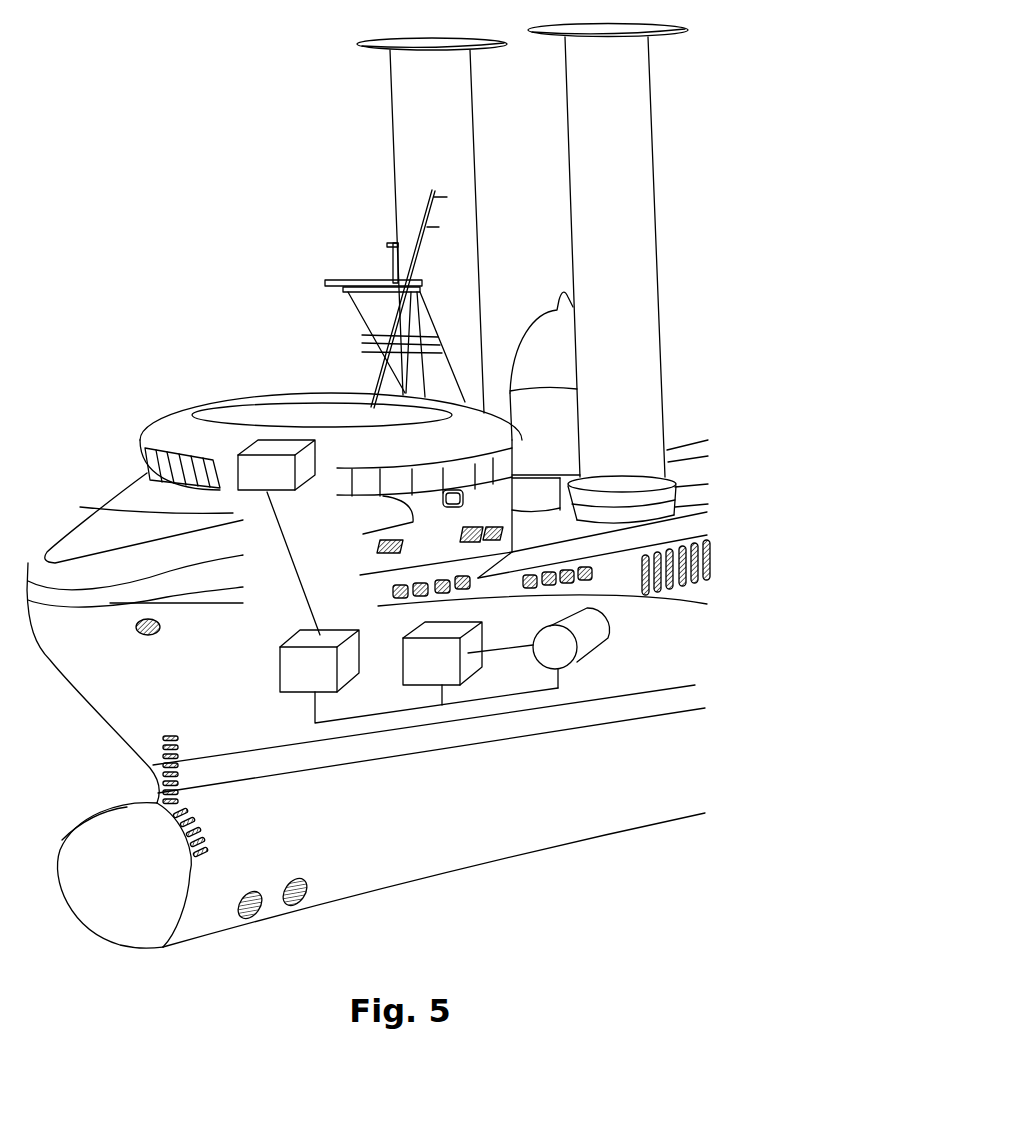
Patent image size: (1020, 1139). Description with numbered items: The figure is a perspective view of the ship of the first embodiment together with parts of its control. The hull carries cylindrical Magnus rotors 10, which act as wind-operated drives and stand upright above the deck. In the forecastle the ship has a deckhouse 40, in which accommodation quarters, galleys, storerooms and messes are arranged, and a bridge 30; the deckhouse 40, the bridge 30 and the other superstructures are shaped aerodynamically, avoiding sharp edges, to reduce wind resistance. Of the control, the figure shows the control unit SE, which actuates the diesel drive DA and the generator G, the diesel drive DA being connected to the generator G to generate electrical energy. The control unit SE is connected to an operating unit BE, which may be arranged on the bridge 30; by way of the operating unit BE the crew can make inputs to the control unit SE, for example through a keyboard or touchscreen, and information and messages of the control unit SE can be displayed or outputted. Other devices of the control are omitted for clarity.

The Magnus rotor 10 is at (522, 274).
The bridge 30 is at (178, 437).
The deckhouse 40 is at (183, 553).
The operating unit BE is at (279, 537).
The control unit SE is at (419, 676).
The diesel drive DA is at (468, 663).
The generator G is at (571, 648).